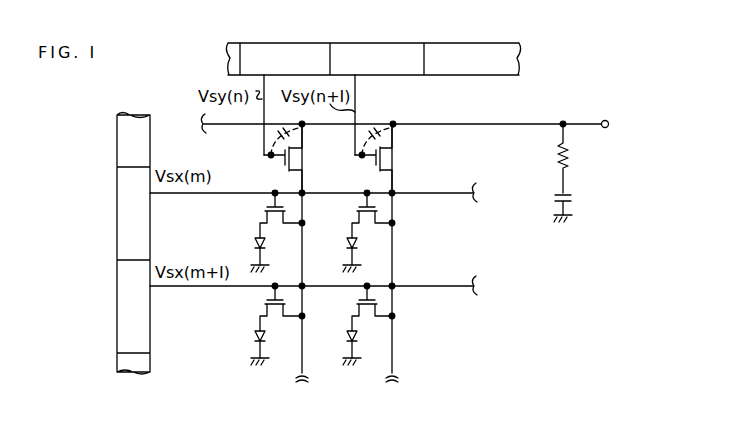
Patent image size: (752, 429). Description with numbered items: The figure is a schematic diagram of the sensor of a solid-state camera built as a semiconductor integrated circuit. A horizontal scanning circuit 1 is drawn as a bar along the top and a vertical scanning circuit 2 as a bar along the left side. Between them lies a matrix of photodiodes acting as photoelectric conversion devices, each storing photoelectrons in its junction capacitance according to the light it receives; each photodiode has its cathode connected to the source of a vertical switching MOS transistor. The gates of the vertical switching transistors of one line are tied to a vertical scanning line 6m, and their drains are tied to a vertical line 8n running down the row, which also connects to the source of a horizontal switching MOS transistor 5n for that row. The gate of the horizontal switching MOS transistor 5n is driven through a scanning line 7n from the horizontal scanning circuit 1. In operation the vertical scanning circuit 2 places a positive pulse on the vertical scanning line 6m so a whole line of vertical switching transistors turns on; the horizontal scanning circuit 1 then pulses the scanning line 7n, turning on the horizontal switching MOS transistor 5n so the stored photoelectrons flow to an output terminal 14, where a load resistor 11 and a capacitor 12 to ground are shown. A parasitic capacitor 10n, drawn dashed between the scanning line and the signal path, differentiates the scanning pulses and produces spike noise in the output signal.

The horizontal scanning circuit 1 is at (400, 43).
The vertical scanning circuit 2 is at (117, 234).
The horizontal switching MOS transistor 5n is at (300, 158).
The vertical scanning line 6m is at (275, 192).
The scanning line 7n is at (262, 110).
The vertical signal line 8n is at (300, 350).
The parasitic capacitor 10n is at (274, 128).
The load resistor 11 is at (570, 158).
The capacitor 12 is at (572, 205).
The output terminal 14 is at (605, 120).